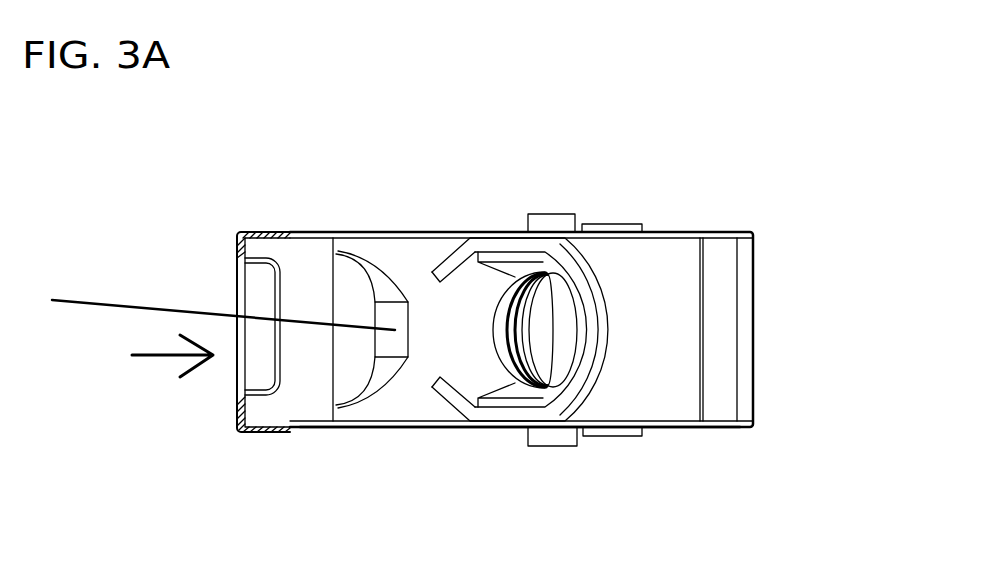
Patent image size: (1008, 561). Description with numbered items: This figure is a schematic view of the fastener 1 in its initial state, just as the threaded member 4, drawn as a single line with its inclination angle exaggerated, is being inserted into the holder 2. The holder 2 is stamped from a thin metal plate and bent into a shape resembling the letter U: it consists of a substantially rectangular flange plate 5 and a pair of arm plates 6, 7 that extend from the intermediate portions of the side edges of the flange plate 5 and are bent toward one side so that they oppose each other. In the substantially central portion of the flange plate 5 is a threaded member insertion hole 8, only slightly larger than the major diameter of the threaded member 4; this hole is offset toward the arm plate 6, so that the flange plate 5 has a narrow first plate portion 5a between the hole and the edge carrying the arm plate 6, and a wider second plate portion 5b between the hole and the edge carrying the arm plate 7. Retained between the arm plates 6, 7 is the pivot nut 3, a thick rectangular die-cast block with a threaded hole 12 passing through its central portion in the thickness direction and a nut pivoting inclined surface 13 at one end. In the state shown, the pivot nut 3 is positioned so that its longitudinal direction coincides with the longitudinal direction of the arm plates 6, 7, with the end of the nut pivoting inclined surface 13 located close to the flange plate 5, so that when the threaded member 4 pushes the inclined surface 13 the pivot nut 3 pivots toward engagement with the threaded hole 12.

The fastener 1 is at (717, 233).
The holder 2 is at (302, 232).
The pivot nut 3 is at (718, 315).
The threaded member 4 is at (138, 305).
The flange plate 5 is at (237, 417).
The first plate portion 5a is at (238, 235).
The second plate portion 5b is at (238, 410).
The arm plate 6 is at (405, 233).
The arm plate 7 is at (385, 427).
The threaded member insertion hole 8 is at (265, 339).
The threaded hole 12 is at (562, 327).
The nut pivoting inclined surface 13 is at (482, 293).